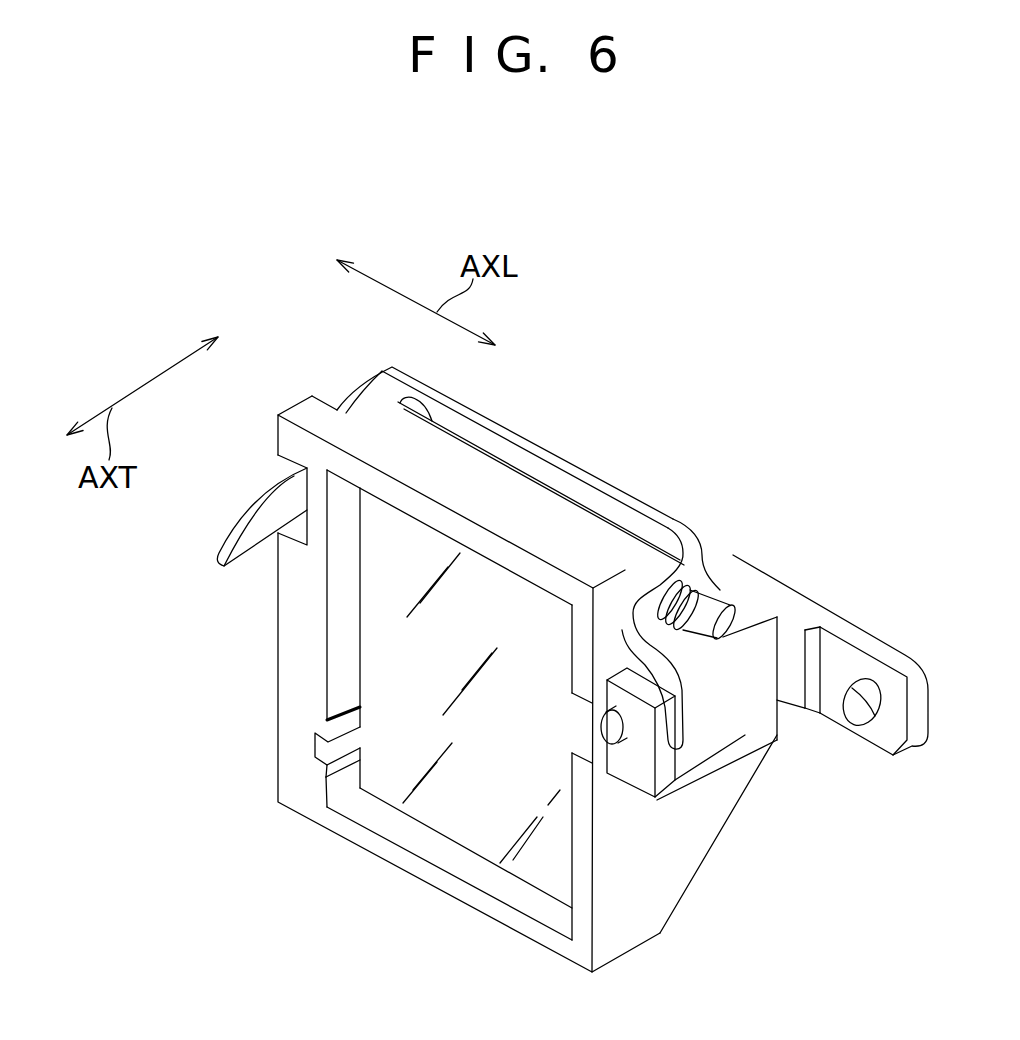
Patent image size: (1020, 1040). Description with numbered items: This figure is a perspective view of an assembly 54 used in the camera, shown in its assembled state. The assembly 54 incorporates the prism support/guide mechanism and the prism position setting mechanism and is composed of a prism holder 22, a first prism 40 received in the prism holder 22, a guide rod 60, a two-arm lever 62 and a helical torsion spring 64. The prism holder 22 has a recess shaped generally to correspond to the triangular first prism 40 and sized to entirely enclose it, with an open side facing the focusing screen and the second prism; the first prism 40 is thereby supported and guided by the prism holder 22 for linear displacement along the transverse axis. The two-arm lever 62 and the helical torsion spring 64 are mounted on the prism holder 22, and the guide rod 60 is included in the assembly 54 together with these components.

The prism holder 22 is at (760, 818).
The first prism 40 is at (450, 792).
The assembly 54 is at (232, 769).
The guide rod 60 is at (601, 727).
The two-arm lever 62 is at (573, 446).
The helical torsion spring 64 is at (697, 581).